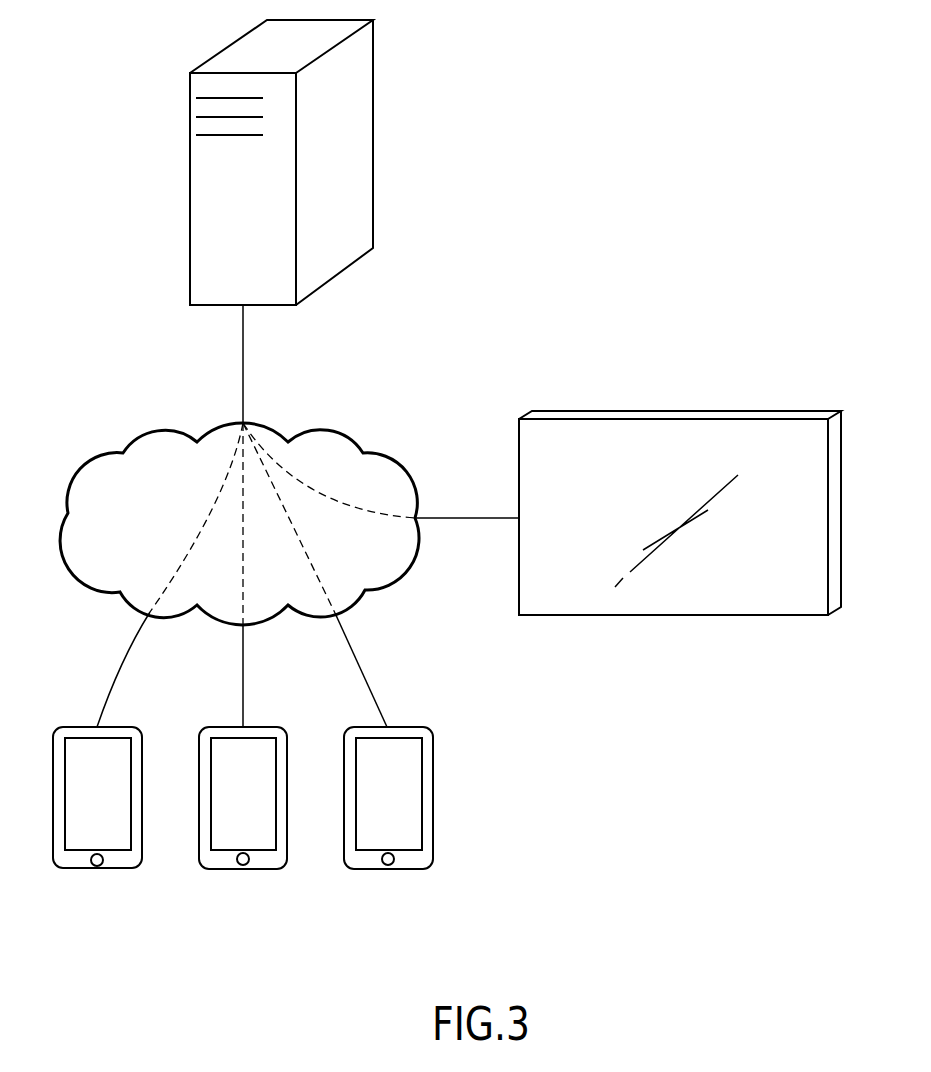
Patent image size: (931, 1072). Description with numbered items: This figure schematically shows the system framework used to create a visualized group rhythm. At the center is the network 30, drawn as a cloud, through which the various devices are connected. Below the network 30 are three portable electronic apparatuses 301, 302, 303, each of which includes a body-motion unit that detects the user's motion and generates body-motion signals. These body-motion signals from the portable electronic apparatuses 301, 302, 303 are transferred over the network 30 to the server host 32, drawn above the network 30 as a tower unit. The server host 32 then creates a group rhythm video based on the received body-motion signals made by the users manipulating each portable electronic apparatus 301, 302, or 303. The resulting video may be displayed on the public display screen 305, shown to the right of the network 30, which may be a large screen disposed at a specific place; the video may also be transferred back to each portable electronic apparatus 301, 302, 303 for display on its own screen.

The network 30 is at (88, 460).
The server host 32 is at (360, 173).
The portable electronic apparatus 301 is at (96, 868).
The portable electronic apparatus 302 is at (242, 867).
The portable electronic apparatus 303 is at (387, 867).
The public display screen 305 is at (687, 411).